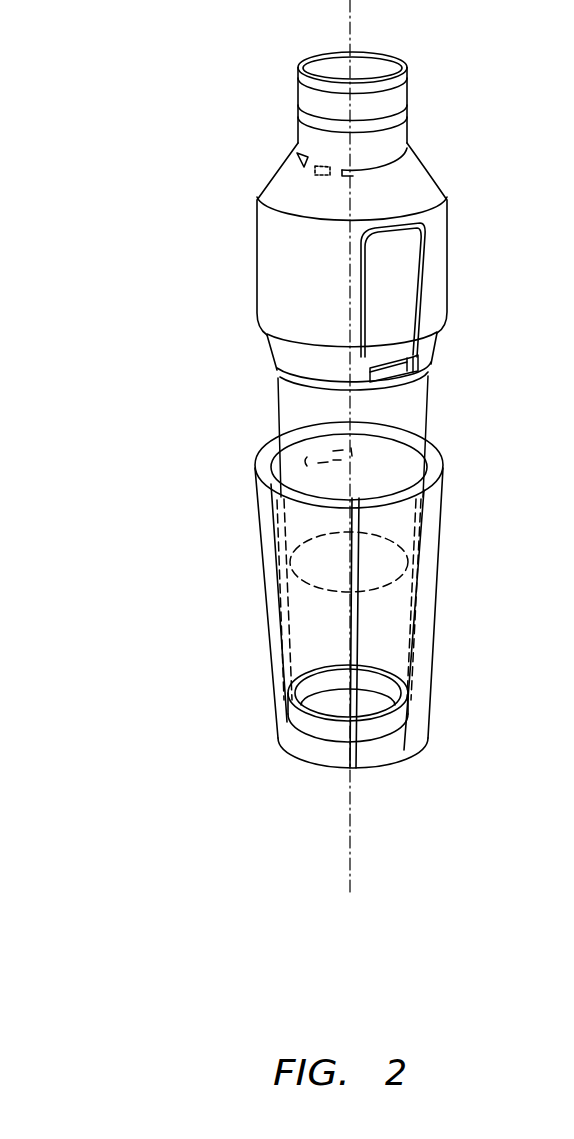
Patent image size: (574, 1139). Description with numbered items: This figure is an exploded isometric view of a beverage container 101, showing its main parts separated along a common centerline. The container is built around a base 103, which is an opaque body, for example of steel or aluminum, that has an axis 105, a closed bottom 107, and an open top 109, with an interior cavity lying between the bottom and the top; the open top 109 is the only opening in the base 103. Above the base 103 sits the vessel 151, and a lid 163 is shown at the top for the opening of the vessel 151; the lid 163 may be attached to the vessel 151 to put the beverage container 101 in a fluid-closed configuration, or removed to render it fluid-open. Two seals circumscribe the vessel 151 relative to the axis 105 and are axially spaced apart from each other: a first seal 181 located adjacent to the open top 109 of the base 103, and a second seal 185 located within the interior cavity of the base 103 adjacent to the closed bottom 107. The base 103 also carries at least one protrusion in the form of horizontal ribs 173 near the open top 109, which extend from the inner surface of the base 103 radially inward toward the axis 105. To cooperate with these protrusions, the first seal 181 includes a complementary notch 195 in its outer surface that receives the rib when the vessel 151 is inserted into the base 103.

The beverage container 101 is at (150, 40).
The base 103 is at (267, 633).
The axis 105 is at (350, 860).
The closed bottom 107 is at (312, 765).
The open top 109 is at (306, 484).
The vessel 151 is at (256, 245).
The lid 163 is at (408, 94).
The horizontal ribs 173 is at (318, 455).
The first seal 181 is at (267, 340).
The second seal 185 is at (292, 712).
The notch 195 is at (403, 378).